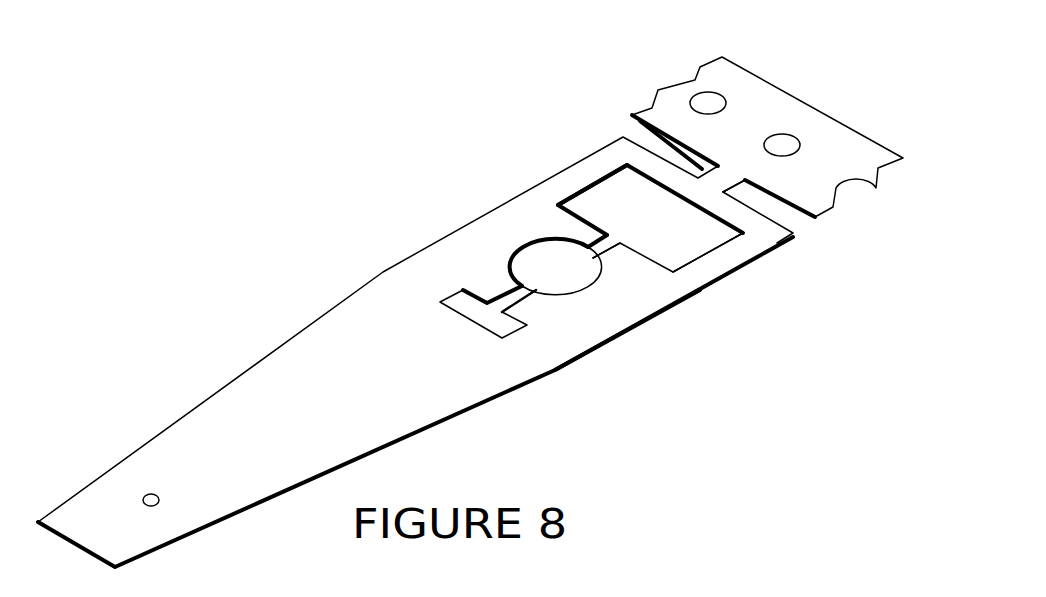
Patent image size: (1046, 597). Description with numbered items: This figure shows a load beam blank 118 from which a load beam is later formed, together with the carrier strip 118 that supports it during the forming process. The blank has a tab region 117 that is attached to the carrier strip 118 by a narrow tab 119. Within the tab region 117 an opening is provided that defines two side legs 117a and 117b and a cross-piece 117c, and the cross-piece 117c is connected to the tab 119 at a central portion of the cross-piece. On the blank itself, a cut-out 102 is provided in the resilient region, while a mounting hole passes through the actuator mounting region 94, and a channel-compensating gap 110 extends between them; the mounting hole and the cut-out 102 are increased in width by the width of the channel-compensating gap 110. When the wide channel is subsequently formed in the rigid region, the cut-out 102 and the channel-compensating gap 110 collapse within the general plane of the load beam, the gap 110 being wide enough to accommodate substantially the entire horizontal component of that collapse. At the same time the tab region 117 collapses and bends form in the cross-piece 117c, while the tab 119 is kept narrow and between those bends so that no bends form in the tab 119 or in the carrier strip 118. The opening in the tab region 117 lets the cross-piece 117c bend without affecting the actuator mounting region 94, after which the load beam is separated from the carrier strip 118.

The actuator mounting region 94 is at (607, 312).
The cut-out 102 is at (465, 305).
The channel-compensating gap 110 is at (522, 293).
The tab region 117 is at (597, 140).
The side leg 117a is at (560, 188).
The side leg 117b is at (722, 255).
The cross-piece 117c is at (728, 210).
The load beam blank / carrier strip 118 is at (320, 352).
The tab 119 is at (633, 116).